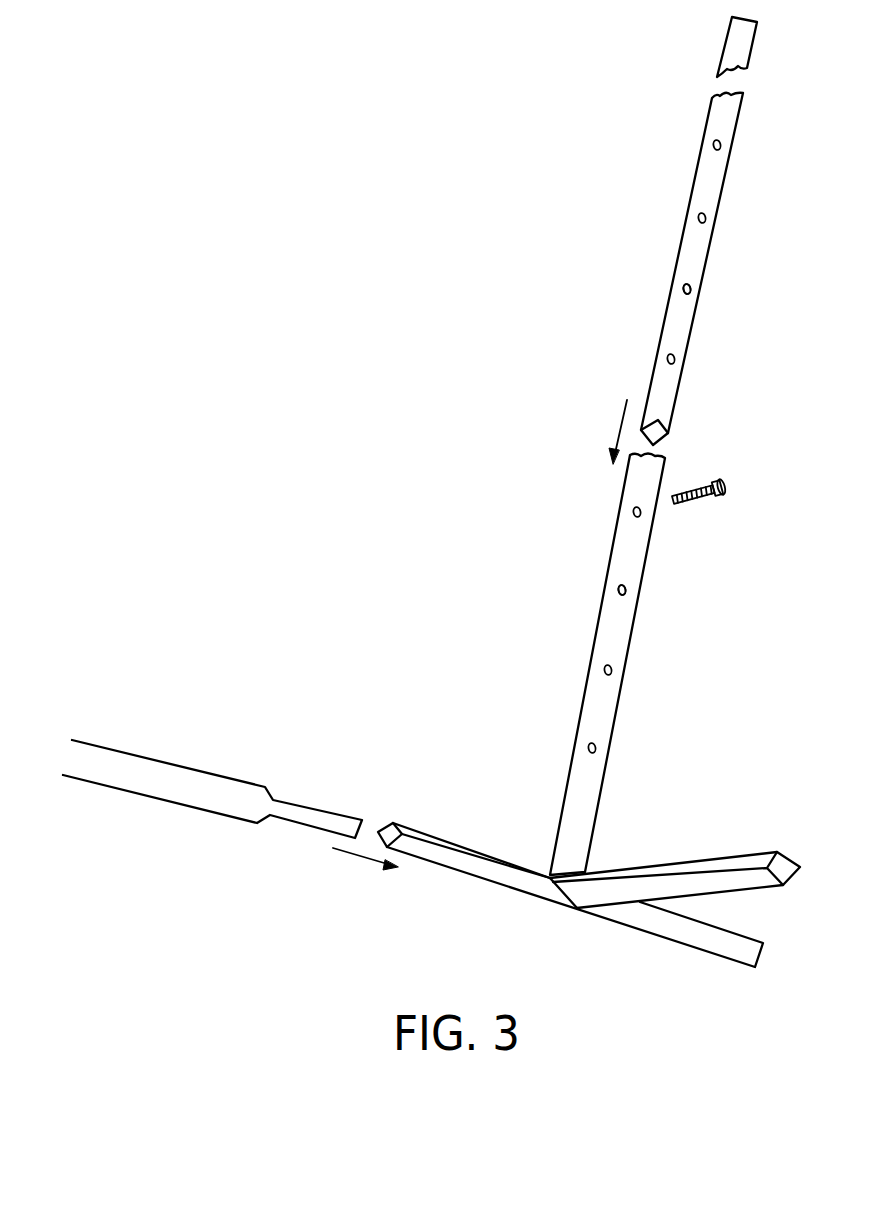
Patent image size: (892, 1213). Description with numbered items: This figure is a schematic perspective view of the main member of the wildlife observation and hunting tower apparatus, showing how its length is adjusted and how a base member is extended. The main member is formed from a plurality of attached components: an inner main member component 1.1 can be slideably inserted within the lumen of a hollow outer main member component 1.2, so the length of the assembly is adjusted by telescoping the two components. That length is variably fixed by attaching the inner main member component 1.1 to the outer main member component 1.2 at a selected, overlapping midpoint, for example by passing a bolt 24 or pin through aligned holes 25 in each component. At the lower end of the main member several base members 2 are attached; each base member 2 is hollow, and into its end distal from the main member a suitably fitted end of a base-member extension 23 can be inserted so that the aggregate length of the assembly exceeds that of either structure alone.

The inner main member component 1.1 is at (725, 182).
The outer main member component 1.2 is at (627, 662).
The base member 2 is at (522, 887).
The base-member extension 23 is at (177, 798).
The bolt 24 is at (725, 482).
The holes 25 is at (690, 289).